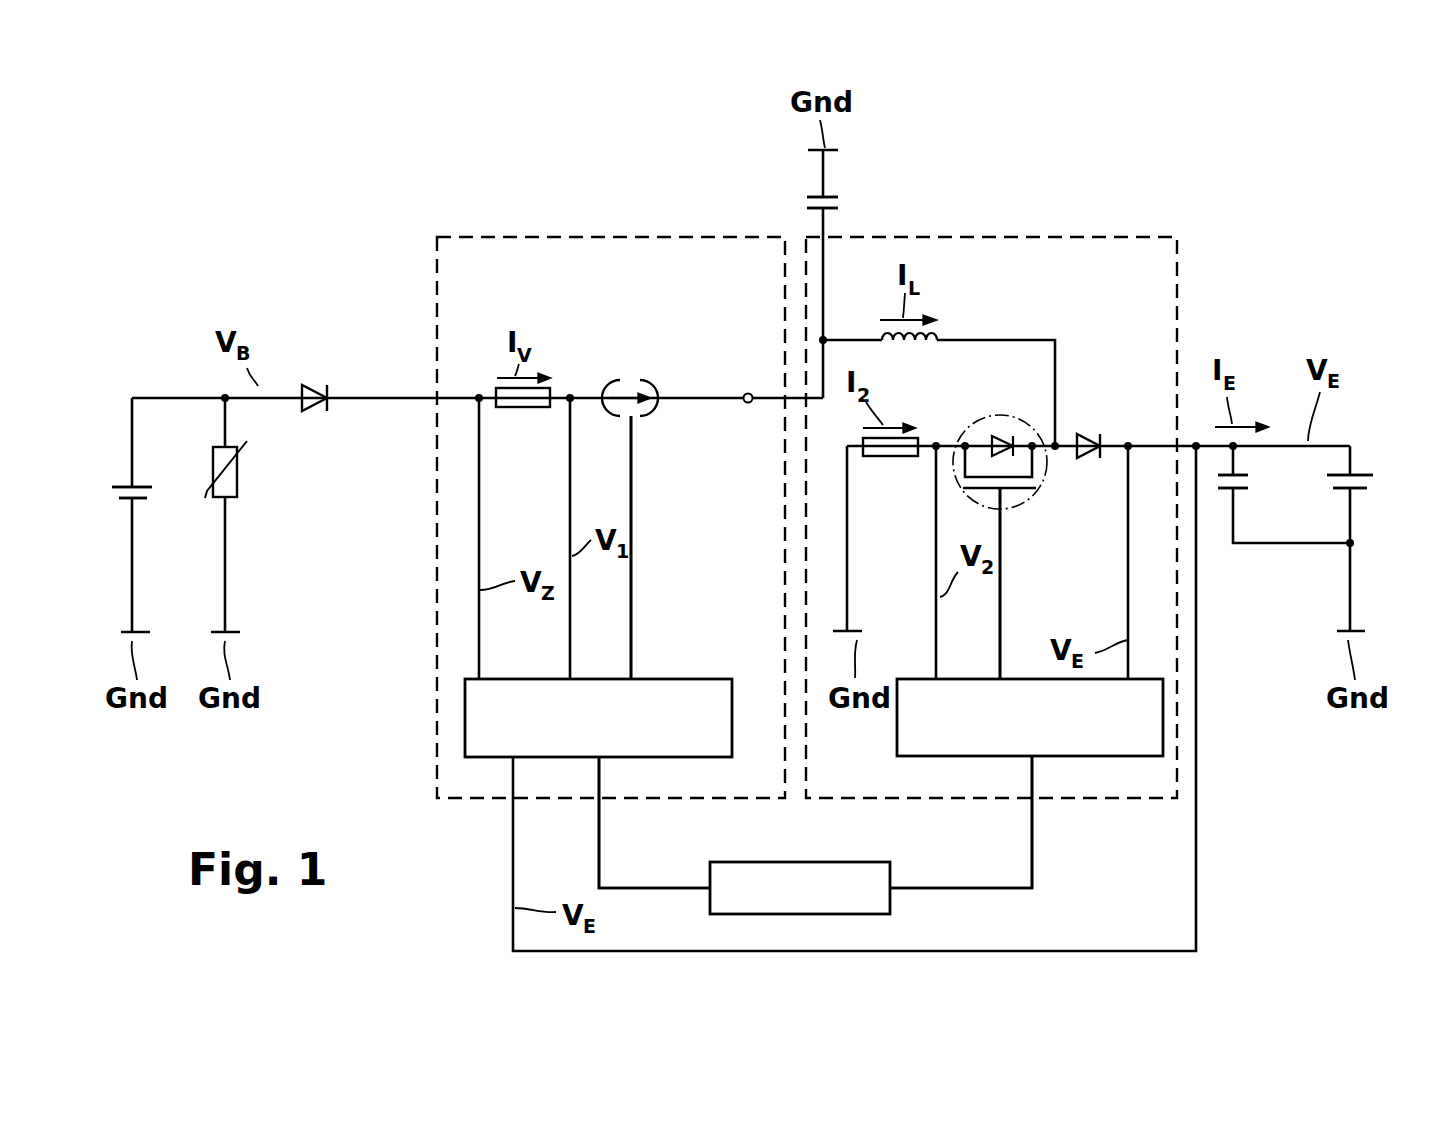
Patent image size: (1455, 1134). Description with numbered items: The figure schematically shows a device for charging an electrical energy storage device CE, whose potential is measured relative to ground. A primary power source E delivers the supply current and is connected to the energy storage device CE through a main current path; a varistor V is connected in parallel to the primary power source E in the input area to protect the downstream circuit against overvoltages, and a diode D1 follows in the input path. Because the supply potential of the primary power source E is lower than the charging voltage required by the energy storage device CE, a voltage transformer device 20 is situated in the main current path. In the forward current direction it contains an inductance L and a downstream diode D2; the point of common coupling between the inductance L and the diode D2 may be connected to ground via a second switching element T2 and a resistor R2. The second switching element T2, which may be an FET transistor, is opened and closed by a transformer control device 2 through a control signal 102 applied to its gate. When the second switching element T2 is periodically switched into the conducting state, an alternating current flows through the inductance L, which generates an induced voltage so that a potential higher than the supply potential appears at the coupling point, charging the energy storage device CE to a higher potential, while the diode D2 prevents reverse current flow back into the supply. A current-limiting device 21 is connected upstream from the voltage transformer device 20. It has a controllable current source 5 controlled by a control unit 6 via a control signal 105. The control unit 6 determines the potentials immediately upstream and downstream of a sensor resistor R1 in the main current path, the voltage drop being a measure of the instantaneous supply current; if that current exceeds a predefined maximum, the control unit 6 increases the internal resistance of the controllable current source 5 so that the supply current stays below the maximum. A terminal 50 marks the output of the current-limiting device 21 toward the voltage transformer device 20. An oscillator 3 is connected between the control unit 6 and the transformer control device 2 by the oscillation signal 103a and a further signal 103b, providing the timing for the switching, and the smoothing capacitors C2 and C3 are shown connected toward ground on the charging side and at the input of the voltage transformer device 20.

The transformer control device 2 is at (1040, 736).
The oscillator 3 is at (810, 905).
The controllable current source 5 is at (615, 383).
The control unit 6 is at (608, 736).
The voltage transformer device 20 is at (1015, 236).
The current-limiting device 21 is at (608, 237).
The terminal 50 is at (748, 393).
The control signal 102 is at (1003, 595).
The oscillation signal 103a is at (653, 886).
The signal line 103b is at (957, 886).
The control signal 105 is at (633, 590).
The primary power source E is at (147, 483).
The varistor V is at (237, 484).
The diode D1 is at (317, 385).
The diode D2 is at (1086, 433).
The sensor resistor R1 is at (527, 407).
The resistor R2 is at (893, 456).
The inductance L is at (905, 348).
The second switching element T2 is at (1040, 492).
The capacitor C2 is at (1243, 482).
The capacitor C3 is at (840, 206).
The electrical energy storage device CE is at (1375, 483).